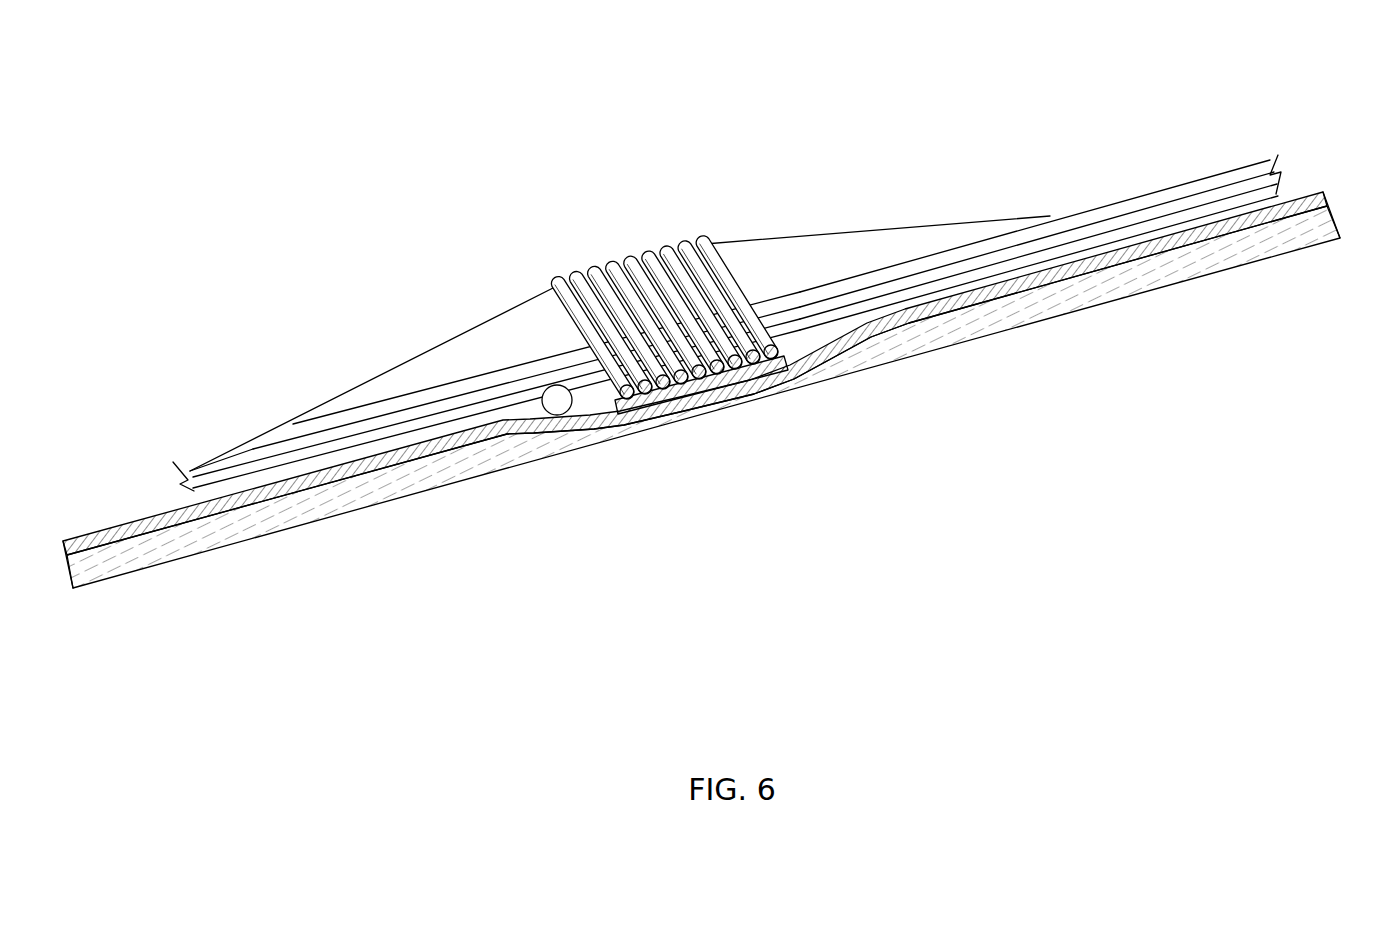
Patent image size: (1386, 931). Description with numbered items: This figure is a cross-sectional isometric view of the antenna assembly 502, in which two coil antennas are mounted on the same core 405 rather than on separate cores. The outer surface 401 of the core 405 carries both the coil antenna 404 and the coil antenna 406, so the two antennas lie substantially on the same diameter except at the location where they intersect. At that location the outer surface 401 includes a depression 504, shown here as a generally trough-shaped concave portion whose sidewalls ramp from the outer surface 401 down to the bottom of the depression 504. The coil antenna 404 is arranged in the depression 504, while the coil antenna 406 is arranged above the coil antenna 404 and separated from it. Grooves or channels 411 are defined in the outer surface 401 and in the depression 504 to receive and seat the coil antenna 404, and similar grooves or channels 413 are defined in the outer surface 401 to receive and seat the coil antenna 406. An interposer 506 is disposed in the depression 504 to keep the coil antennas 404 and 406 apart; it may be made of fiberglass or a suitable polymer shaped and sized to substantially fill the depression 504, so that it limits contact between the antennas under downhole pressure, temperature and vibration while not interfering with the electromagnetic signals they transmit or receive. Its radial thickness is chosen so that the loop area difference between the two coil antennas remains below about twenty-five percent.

The antenna assembly 502 is at (701, 333).
The core 405 is at (1096, 286).
The grooves or channels 411 is at (278, 491).
The outer surface 401 is at (530, 386).
The coil antenna 404 is at (846, 373).
The depression 504 is at (683, 436).
The interposer 506 is at (713, 382).
The coil antenna 406 is at (705, 243).
The grooves or channels 413 is at (763, 368).